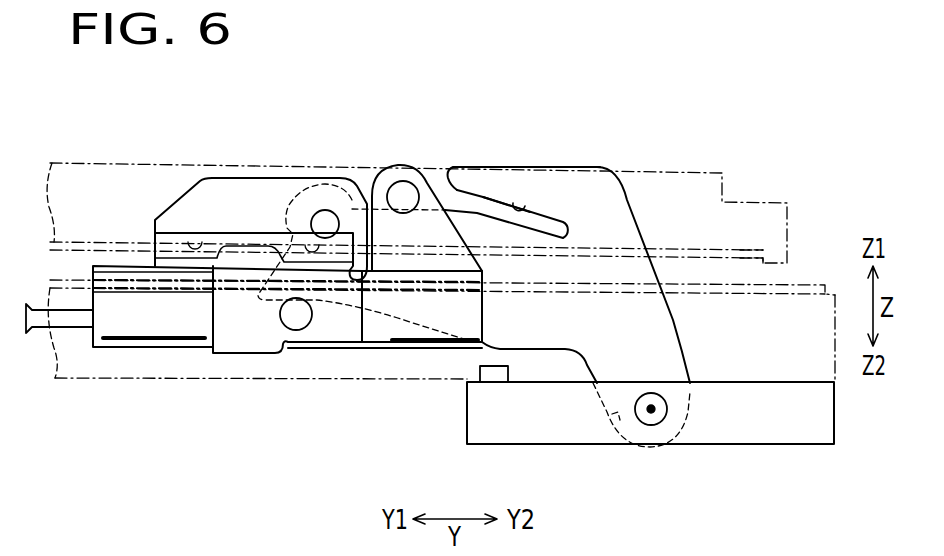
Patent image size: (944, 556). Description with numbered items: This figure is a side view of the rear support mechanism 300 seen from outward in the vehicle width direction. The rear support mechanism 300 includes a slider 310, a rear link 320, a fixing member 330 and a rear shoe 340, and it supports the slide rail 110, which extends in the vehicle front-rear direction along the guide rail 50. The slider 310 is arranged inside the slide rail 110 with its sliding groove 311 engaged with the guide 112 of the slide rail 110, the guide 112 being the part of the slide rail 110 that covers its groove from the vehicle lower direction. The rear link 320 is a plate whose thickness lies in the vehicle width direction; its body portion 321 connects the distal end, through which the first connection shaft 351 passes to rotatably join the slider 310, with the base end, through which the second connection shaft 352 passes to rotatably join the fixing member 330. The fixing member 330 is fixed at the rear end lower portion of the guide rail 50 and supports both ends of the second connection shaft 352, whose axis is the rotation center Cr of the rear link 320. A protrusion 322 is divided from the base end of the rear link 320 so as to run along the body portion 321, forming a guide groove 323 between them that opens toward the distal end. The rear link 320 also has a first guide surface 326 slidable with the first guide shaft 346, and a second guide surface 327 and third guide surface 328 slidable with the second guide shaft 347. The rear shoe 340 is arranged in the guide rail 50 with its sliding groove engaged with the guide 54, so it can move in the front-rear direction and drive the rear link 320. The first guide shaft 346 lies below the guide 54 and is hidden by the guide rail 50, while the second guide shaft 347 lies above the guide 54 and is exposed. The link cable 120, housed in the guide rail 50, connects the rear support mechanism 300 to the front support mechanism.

The guide rail 50 is at (70, 380).
The guide 54 is at (825, 286).
The slide rail 110 is at (70, 162).
The guide 112 is at (763, 255).
The link cable 120 is at (37, 328).
The rear support mechanism 300 is at (507, 116).
The slider 310 is at (193, 190).
The sliding groove 311 is at (200, 242).
The rear link 320 is at (573, 253).
The body portion 321 is at (531, 346).
The protrusion 322 is at (573, 179).
The guide groove 323 is at (542, 186).
The first guide surface 326 is at (412, 348).
The second guide surface 327 is at (516, 199).
The third guide surface 328 is at (479, 195).
The fixing member 330 is at (778, 446).
The rear shoe 340 is at (243, 355).
The first guide shaft 346 is at (303, 331).
The second guide shaft 347 is at (405, 181).
The first connection shaft 351 is at (323, 210).
The second connection shaft 352 is at (648, 427).
The rotation center Cr is at (656, 410).